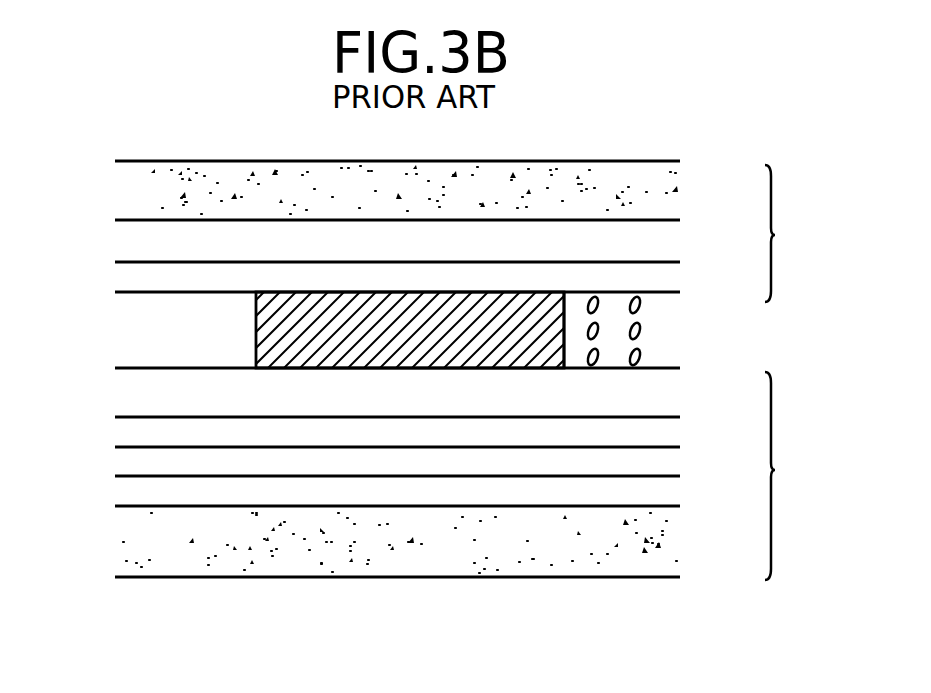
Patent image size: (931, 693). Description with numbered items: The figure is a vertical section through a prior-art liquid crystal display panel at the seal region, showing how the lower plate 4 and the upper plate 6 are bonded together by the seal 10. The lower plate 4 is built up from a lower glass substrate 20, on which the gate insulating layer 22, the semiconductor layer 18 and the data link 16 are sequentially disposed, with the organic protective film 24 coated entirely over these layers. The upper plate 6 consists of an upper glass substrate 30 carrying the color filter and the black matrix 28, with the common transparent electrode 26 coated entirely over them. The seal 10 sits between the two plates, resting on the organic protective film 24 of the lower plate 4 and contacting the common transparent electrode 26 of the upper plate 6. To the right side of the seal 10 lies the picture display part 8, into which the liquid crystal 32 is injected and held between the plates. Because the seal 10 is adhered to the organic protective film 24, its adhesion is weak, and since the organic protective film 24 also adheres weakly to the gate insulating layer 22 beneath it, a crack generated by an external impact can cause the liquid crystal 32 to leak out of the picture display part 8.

The upper glass substrate 30 is at (670, 192).
The black matrix 28 is at (670, 247).
The common transparent electrode 26 is at (676, 285).
The upper plate 6 is at (783, 233).
The seal 10 is at (256, 338).
The picture display part 8 is at (677, 314).
The liquid crystal 32 is at (640, 328).
The organic protective film 24 is at (677, 394).
The data link 16 is at (674, 430).
The semiconductor layer 18 is at (674, 459).
The gate insulating layer 22 is at (676, 490).
The lower glass substrate 20 is at (677, 545).
The lower plate 4 is at (789, 476).